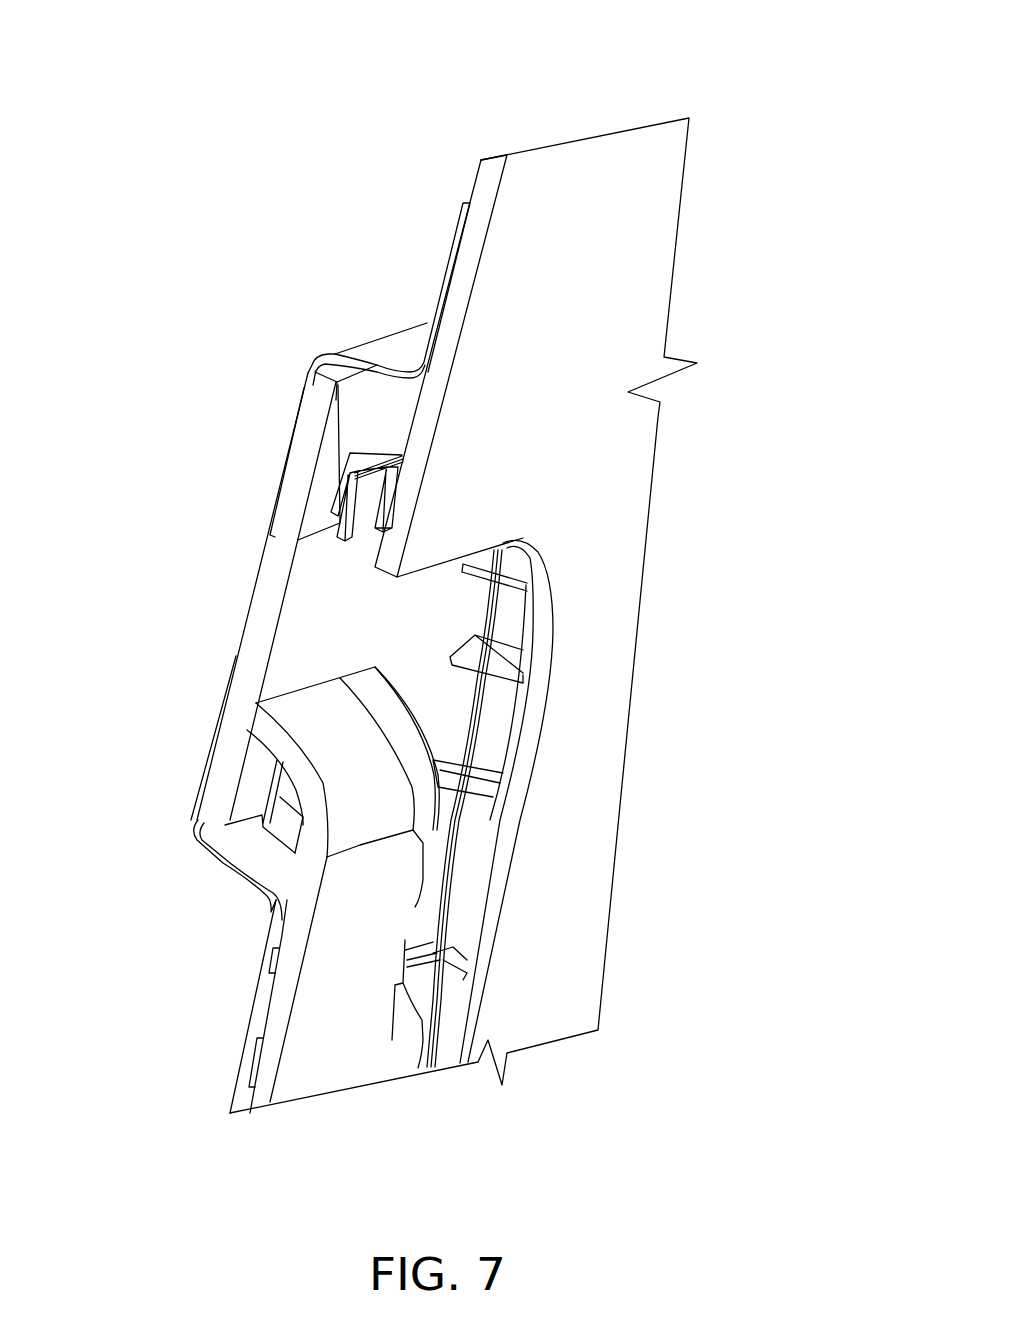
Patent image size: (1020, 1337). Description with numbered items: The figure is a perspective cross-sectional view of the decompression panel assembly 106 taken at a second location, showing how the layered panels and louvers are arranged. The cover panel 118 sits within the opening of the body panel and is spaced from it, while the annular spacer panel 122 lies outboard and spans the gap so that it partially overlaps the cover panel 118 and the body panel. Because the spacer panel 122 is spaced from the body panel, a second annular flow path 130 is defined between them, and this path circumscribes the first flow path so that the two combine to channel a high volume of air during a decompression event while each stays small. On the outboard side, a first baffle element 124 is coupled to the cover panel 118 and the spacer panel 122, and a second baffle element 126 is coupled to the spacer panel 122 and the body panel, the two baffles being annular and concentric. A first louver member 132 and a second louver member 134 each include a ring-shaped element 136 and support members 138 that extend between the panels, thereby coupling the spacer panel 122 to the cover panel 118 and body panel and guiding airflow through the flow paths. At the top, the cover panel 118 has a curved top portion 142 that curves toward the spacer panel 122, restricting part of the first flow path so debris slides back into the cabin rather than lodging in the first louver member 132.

The decompression panel assembly 106 is at (748, 106).
The cover panel 118 is at (373, 913).
The annular spacer panel 122 is at (267, 592).
The first baffle element 124 is at (213, 862).
The second baffle element 126 is at (346, 356).
The second annular flow path 130 is at (520, 706).
The first louver member 132 is at (263, 781).
The second louver member 134 is at (315, 476).
The ring-shaped element 136 is at (512, 617).
The support members 138 is at (513, 667).
The curved top portion 142 is at (378, 773).